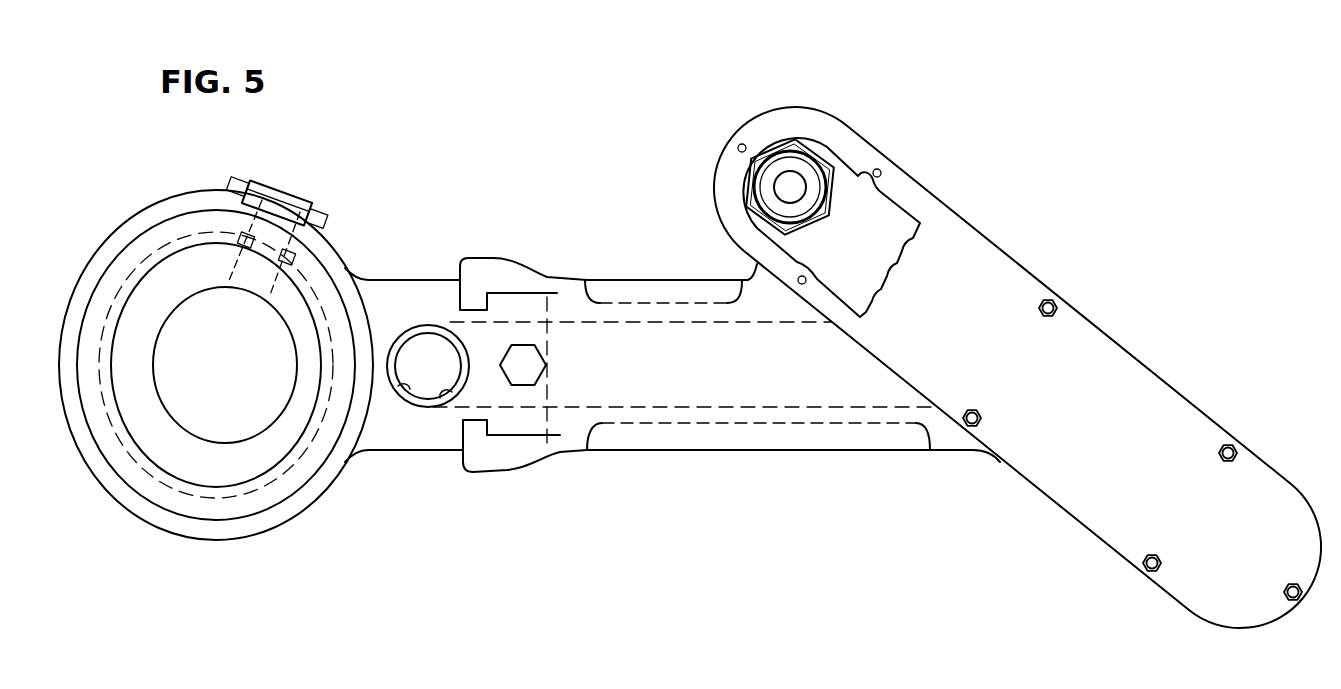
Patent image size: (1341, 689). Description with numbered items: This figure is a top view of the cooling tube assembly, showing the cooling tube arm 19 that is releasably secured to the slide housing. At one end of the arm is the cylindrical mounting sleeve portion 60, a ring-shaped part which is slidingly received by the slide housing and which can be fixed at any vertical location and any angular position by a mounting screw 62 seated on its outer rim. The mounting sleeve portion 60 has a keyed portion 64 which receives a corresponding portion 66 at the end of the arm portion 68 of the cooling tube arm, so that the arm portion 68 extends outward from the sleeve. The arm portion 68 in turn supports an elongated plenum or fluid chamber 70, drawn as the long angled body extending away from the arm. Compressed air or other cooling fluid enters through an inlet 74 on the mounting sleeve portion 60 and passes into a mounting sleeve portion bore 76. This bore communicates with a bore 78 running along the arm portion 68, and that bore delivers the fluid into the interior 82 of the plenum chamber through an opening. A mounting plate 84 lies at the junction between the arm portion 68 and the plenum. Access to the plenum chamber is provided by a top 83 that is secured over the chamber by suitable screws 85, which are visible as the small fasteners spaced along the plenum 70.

The lever arm assembly 19 is at (578, 258).
The cylindrical mounting sleeve portion 60 is at (117, 237).
The mounting screw 62 is at (227, 182).
The keyed portion 64 is at (408, 293).
The corresponding portion 66 is at (487, 273).
The arm portion 68 is at (780, 415).
The plenum or fluid chamber 70 is at (992, 277).
The inlet 74 is at (413, 390).
The mounting sleeve portion bore 76 is at (430, 403).
The bore 78 is at (633, 403).
The interior of the plenum chamber 82 is at (895, 220).
The top 83 is at (1150, 459).
The mounting plate 84 is at (825, 132).
The screws 85 is at (1147, 563).